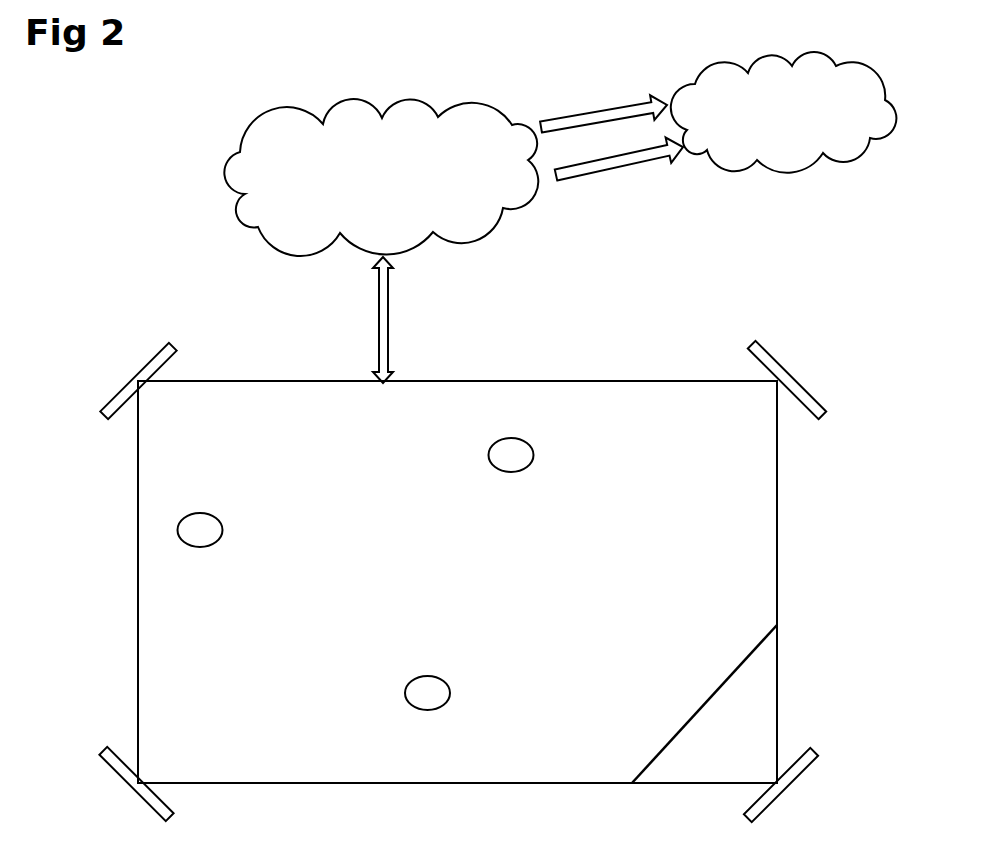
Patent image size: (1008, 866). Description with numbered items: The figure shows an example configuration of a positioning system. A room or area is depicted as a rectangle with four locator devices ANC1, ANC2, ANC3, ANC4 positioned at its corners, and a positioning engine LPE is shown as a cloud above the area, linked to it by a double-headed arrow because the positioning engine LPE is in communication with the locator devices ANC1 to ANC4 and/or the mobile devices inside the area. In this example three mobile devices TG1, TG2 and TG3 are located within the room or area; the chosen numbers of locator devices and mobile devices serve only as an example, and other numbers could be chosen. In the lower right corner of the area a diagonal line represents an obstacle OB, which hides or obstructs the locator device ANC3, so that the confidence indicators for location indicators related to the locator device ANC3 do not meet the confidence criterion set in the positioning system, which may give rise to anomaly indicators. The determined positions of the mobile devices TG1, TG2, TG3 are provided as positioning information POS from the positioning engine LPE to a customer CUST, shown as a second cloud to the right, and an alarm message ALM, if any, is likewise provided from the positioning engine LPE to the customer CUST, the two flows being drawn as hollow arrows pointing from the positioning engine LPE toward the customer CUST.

The positioning engine LPE is at (381, 177).
The customer CUST is at (784, 112).
The positioning information POS is at (603, 99).
The alarm message ALM is at (619, 177).
The locator device ANC1 is at (119, 379).
The locator device ANC2 is at (116, 790).
The locator device ANC3 is at (804, 788).
The locator device ANC4 is at (810, 380).
The mobile device TG1 is at (204, 553).
The mobile device TG2 is at (517, 478).
The mobile device TG3 is at (432, 712).
The obstacle OB is at (704, 704).